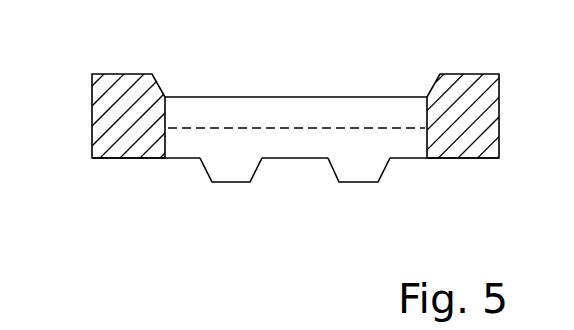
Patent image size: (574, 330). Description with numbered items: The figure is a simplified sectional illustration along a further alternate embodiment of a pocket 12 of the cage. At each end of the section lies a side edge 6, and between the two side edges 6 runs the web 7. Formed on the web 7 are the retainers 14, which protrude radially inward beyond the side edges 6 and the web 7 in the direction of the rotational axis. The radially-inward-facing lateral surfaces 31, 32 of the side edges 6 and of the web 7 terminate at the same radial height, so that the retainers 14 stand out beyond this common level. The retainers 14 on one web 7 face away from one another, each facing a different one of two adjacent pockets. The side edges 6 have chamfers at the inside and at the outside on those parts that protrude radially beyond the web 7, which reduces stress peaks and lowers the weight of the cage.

The side edge 6 is at (122, 123).
The web 7 is at (252, 113).
The pocket 12 is at (367, 112).
The retainer 14 is at (230, 173).
The radially-inward-facing lateral surface of the side edge 31 is at (123, 162).
The radially-inward-facing lateral surface of the web 32 is at (197, 160).